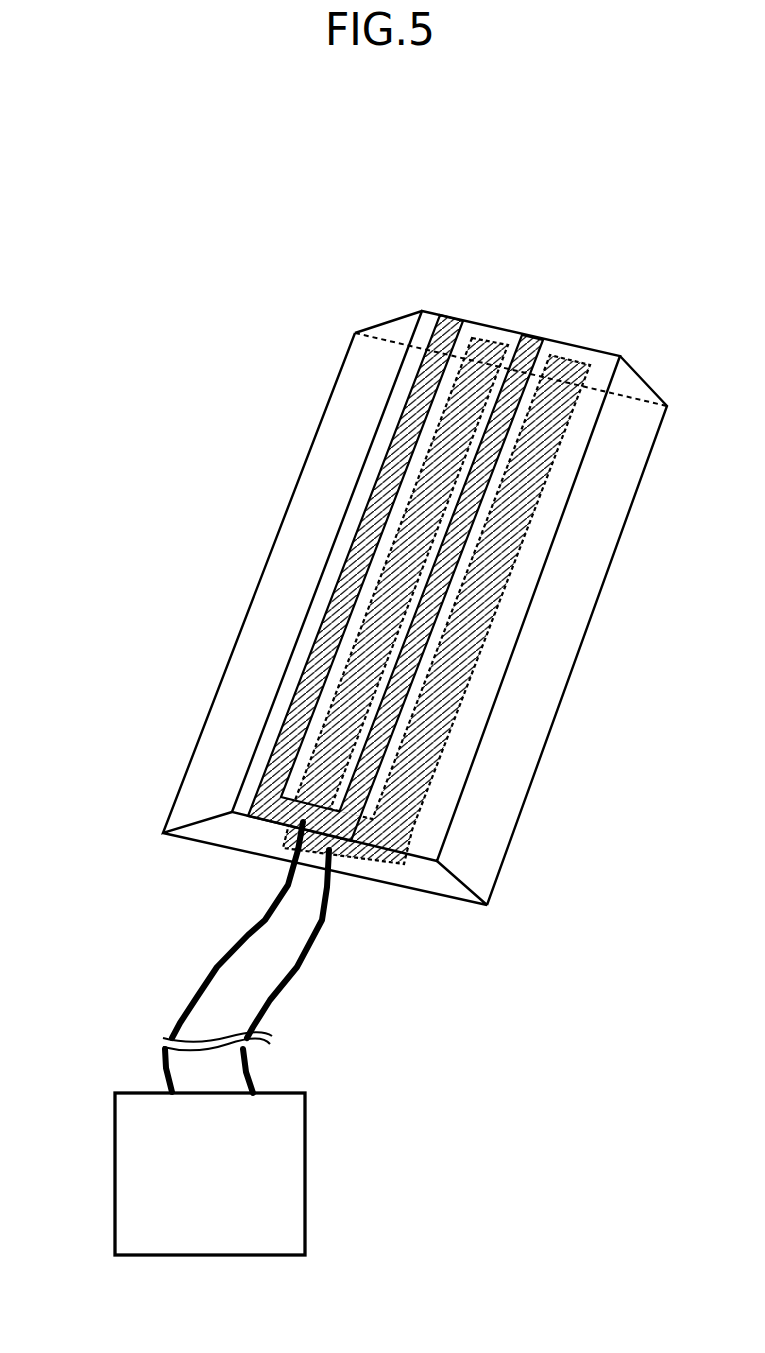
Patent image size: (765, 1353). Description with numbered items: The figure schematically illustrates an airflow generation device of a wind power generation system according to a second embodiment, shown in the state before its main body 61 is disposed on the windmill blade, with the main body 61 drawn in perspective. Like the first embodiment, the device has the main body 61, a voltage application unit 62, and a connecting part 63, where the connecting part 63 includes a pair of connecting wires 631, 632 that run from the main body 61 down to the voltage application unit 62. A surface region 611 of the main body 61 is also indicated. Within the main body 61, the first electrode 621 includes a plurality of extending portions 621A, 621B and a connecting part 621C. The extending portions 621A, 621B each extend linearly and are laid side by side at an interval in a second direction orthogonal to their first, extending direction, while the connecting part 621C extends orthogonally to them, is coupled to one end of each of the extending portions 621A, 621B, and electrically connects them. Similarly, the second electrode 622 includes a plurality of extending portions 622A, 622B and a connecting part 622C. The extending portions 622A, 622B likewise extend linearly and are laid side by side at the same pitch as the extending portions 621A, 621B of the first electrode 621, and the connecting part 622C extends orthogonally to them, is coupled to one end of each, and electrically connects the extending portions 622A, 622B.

The main body 61 is at (334, 608).
The piezoelectric body 611 is at (357, 363).
The voltage application unit 62 is at (128, 1175).
The connecting part 63 is at (218, 957).
The connecting wire 631 is at (215, 972).
The connecting wire 632 is at (310, 938).
The first electrode 621 is at (272, 578).
The extending portion 621A is at (298, 717).
The extending portion 621B is at (367, 770).
The connecting part 621C is at (303, 810).
The second electrode 622 is at (474, 601).
The extending portion 622A is at (347, 735).
The extending portion 622B is at (413, 792).
The connecting part 622C is at (360, 832).